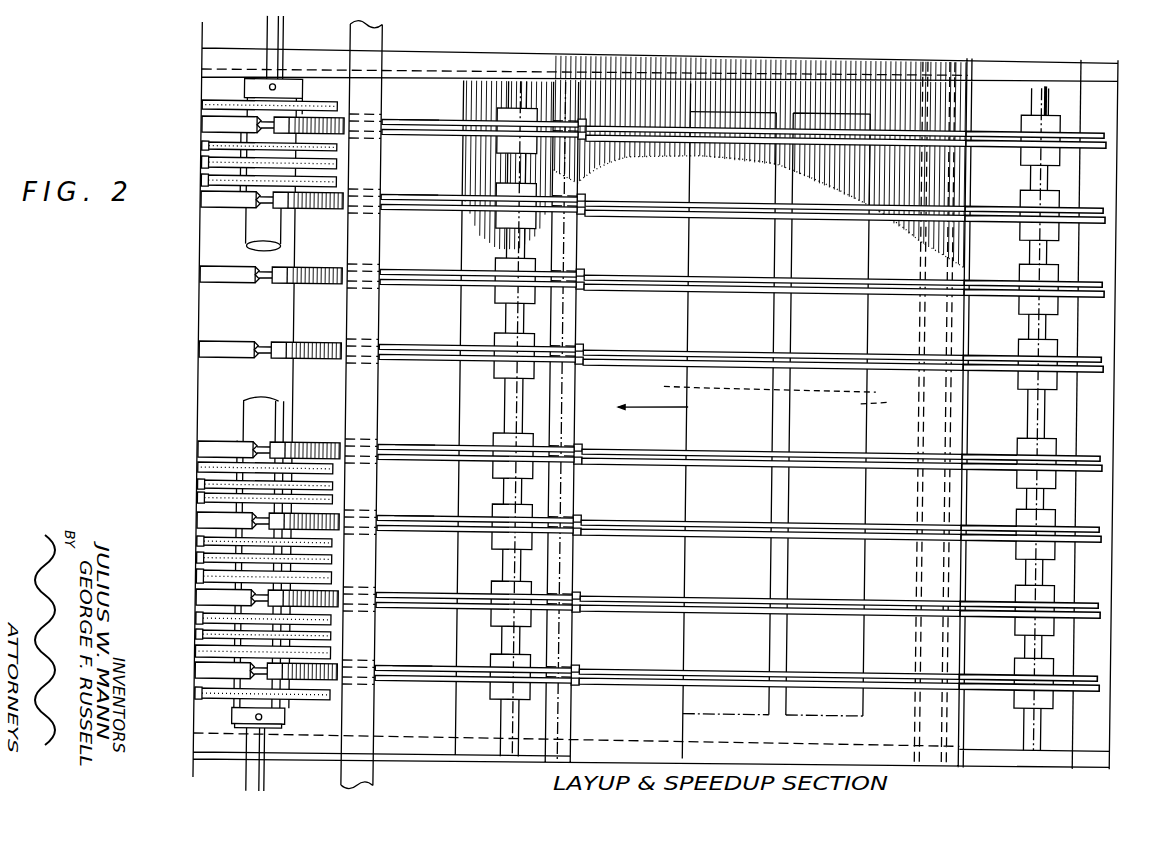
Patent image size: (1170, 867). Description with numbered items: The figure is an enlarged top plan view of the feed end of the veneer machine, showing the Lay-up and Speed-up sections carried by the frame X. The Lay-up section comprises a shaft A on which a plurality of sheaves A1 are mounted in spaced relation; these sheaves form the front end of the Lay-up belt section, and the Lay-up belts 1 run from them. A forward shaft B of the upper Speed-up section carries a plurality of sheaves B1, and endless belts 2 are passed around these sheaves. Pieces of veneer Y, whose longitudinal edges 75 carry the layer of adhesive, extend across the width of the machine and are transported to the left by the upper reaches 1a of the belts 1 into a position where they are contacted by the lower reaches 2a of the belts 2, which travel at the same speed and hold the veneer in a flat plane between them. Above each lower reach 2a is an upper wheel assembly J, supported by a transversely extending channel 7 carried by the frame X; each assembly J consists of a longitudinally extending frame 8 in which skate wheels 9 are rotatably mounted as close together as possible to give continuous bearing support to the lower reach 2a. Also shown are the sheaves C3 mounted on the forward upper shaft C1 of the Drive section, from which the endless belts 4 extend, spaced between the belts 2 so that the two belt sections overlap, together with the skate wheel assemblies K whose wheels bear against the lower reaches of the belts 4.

The lay-up belt 1 is at (1107, 133).
The upper reach of endless belt 1 1a is at (749, 203).
The endless belt 2 is at (203, 124).
The lower reach of endless belt 2 2a is at (264, 120).
The endless belt 4 is at (202, 180).
The transversely extending channel 7 is at (380, 36).
The longitudinally extending frame 8 is at (397, 194).
The wheel 9 is at (344, 116).
The longitudinal edge 75 is at (774, 388).
The shaft A is at (1057, 92).
The sheave A1 is at (1107, 126).
The forward shaft B is at (514, 84).
The sheave B1 is at (583, 136).
The forward upper shaft C1 is at (269, 774).
The sheave C3 is at (218, 101).
The upper wheel assembly J is at (413, 118).
The skate wheel assembly K is at (201, 137).
The frame X is at (1097, 168).
The piece of veneer Y is at (693, 428).